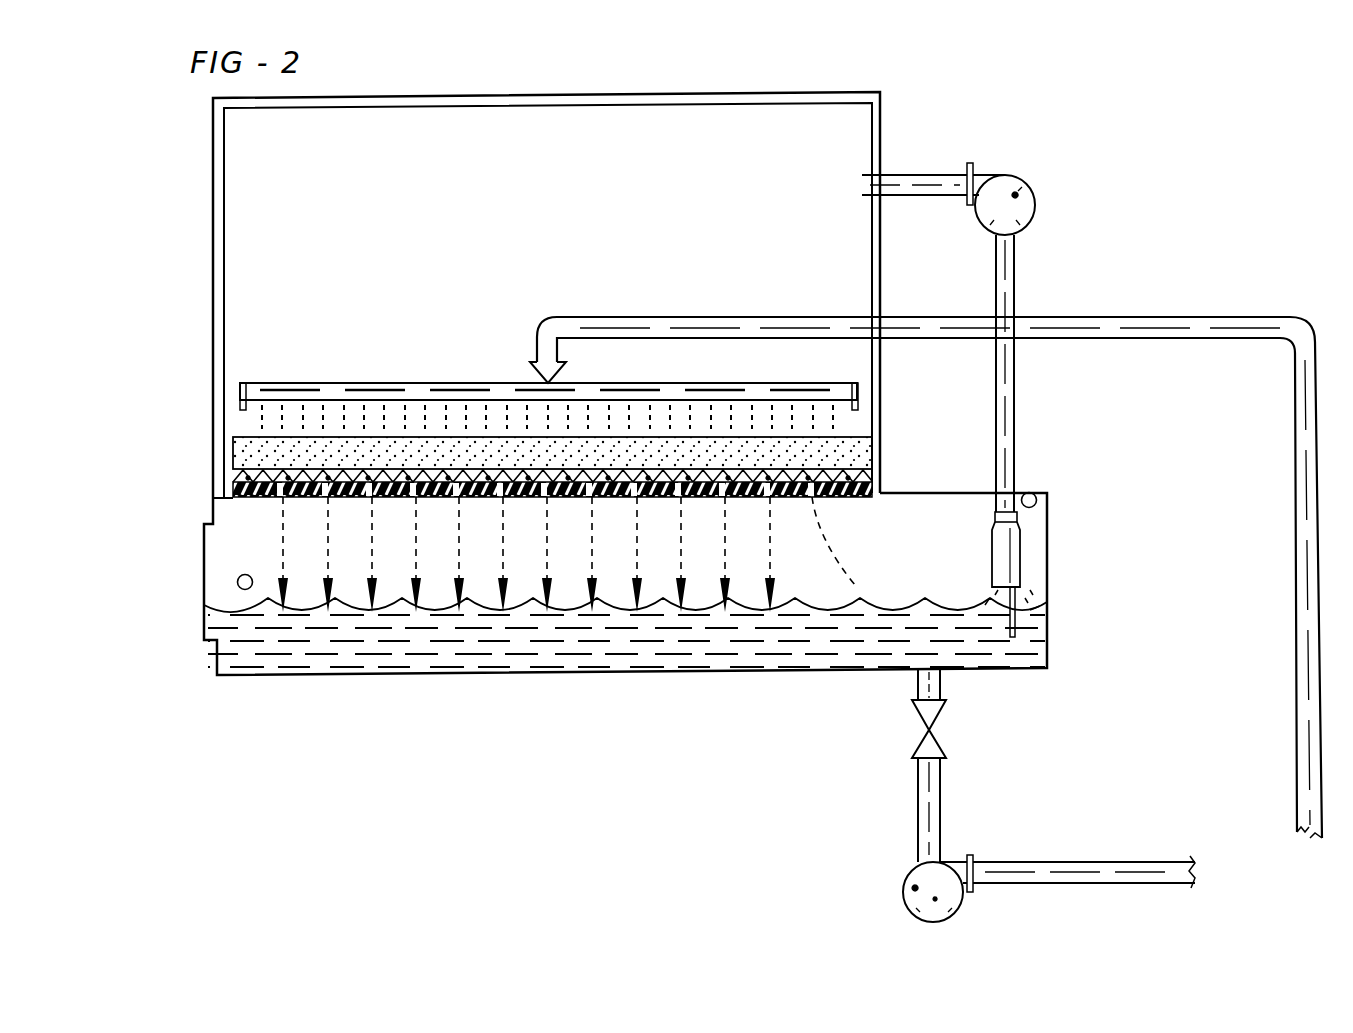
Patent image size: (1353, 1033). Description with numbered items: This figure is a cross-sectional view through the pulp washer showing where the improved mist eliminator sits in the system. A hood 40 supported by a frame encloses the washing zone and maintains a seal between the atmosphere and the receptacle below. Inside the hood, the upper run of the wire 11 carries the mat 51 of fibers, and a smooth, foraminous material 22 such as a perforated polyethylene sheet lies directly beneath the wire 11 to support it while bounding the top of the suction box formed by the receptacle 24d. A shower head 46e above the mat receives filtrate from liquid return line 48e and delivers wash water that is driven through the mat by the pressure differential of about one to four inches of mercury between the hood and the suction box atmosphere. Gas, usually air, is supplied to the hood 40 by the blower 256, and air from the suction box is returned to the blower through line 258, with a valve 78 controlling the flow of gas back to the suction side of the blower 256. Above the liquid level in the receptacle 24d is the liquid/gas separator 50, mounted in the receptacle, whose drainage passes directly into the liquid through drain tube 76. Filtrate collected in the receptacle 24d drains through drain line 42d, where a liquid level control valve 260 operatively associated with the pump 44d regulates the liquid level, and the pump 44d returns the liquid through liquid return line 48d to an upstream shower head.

The hood 40 is at (382, 118).
The wire 11 is at (212, 486).
The shower head 46e is at (318, 384).
The mat 51 is at (200, 394).
The liquid/gas separator 50 is at (240, 458).
The foraminous material 22 is at (300, 498).
The receptacle 24d is at (238, 588).
The blower 256 is at (1026, 184).
The line 258 is at (1018, 412).
The liquid return line 48e is at (1142, 316).
The valve 78 is at (1038, 497).
The drain tube 76 is at (1022, 608).
The liquid level control valve 260 is at (948, 702).
The drain line 42d is at (944, 785).
The pump 44d is at (950, 866).
The liquid return line 48d is at (1142, 862).